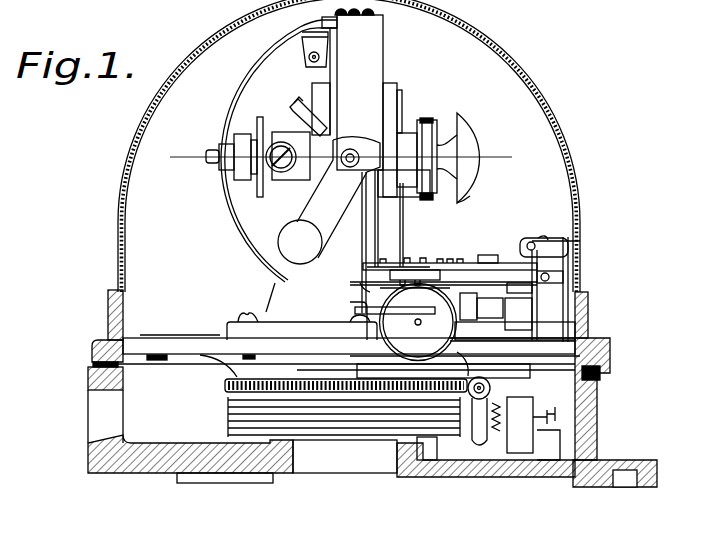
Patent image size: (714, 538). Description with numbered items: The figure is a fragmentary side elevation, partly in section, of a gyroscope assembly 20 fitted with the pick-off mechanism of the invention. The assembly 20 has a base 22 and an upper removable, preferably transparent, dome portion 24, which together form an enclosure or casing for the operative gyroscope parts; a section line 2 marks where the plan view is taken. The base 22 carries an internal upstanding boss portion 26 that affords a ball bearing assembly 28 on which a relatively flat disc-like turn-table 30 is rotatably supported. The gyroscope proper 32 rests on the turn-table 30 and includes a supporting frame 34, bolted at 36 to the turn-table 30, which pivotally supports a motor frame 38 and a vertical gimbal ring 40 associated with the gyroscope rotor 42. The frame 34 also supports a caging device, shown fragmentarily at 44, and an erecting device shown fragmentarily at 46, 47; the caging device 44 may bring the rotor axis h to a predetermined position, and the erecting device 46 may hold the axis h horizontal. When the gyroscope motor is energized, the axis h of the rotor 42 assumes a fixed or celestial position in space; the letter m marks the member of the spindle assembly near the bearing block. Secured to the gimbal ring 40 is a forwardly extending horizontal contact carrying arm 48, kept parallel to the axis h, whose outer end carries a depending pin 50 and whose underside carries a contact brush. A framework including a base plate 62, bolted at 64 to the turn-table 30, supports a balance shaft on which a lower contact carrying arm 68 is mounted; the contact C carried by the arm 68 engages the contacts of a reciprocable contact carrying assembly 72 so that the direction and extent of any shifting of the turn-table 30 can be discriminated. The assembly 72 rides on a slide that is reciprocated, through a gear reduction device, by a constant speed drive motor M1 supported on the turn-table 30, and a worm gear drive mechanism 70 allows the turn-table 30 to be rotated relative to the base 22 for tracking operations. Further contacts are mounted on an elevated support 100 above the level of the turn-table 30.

The section line 2- 2 is at (175, 177).
The gyroscope assembly 20 is at (510, 99).
The base 22 is at (490, 474).
The dome portion 24 is at (563, 128).
The boss portion 26 is at (412, 477).
The ball bearing assembly 28 is at (348, 438).
The turn-table 30 is at (178, 330).
The gyroscope 32 is at (288, 283).
The supporting frame 34 is at (416, 221).
The bolts 36 is at (242, 315).
The motor frame 38 is at (268, 183).
The vertical gimbal ring 40 is at (334, 68).
The gyroscope rotor 42 is at (399, 93).
The caging device 44 is at (300, 107).
The erecting device 46 is at (470, 153).
The erecting device portion 47 is at (329, 200).
The contact carrying arm 48 is at (445, 263).
The pin 50 is at (500, 283).
The base plate 62 is at (530, 338).
The bolts 64 is at (563, 330).
The contact carrying arm 68 is at (548, 292).
The worm gear drive mechanism 70 is at (493, 393).
The reciprocable contact carrying assembly 72 is at (519, 320).
The elevated support 100 is at (362, 287).
The rotor axis h is at (337, 158).
The disc member m is at (244, 178).
The contact C is at (508, 266).
The constant speed drive motor M1 is at (403, 322).